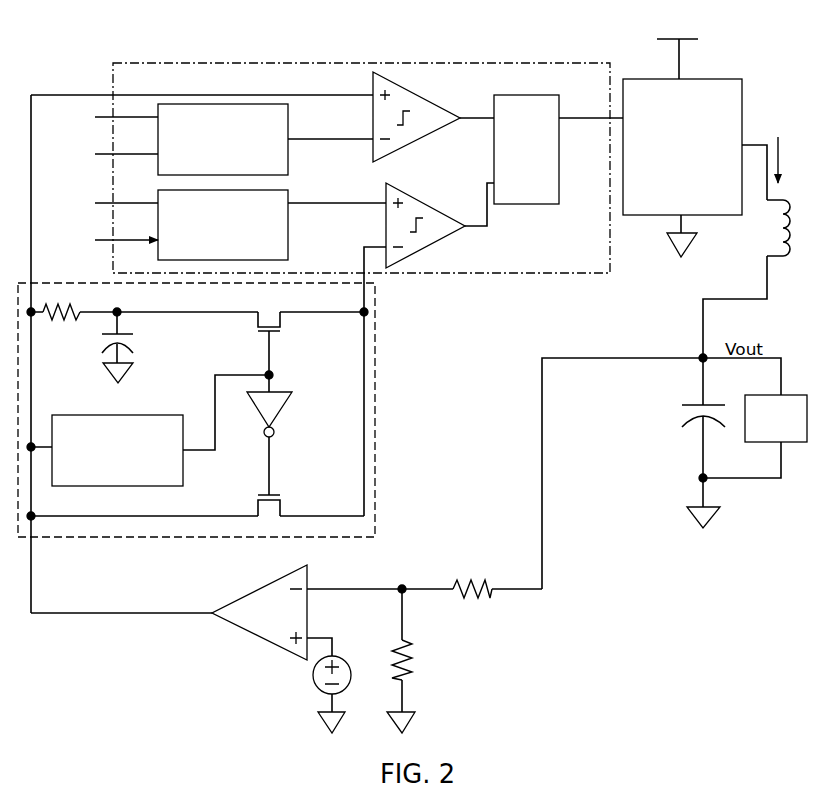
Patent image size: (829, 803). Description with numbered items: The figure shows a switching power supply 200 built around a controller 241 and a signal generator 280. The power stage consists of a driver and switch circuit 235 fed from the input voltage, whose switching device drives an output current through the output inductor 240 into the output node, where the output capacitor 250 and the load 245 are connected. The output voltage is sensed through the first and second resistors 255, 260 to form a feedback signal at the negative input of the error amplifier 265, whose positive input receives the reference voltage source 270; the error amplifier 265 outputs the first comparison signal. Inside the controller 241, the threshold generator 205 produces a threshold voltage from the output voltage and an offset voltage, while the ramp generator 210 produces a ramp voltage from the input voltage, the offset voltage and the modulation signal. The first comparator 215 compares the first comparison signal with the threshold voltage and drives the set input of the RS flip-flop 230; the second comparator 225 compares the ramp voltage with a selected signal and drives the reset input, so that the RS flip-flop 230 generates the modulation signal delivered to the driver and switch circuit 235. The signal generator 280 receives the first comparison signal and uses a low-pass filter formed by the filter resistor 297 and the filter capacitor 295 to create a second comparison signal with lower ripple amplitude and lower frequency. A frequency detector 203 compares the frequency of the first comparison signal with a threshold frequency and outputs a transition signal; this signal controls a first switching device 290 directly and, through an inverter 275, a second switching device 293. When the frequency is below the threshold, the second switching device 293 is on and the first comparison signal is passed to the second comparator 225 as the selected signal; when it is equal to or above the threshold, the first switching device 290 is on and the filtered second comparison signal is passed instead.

The switching power supply 200 is at (73, 55).
The frequency detector 203 is at (183, 485).
The threshold generator 205 is at (292, 153).
The ramp generator 210 is at (292, 236).
The first comparator 215 is at (410, 146).
The second comparator 225 is at (426, 247).
The RS flip-flop 230 is at (536, 207).
The driver and switch circuit 235 is at (722, 79).
The output inductor 240 is at (779, 262).
The controller 241 is at (478, 273).
The load 245 is at (796, 394).
The output capacitor 250 is at (686, 404).
The first resistor 255 is at (489, 604).
The second resistor 260 is at (409, 677).
The error amplifier 265 is at (248, 644).
The reference voltage source 270 is at (348, 696).
The inverter 275 is at (284, 410).
The signal generator 280 is at (376, 488).
The first switching device 290 is at (283, 330).
The second switching device 293 is at (280, 494).
The filter capacitor 295 is at (104, 356).
The filter resistor 297 is at (64, 324).